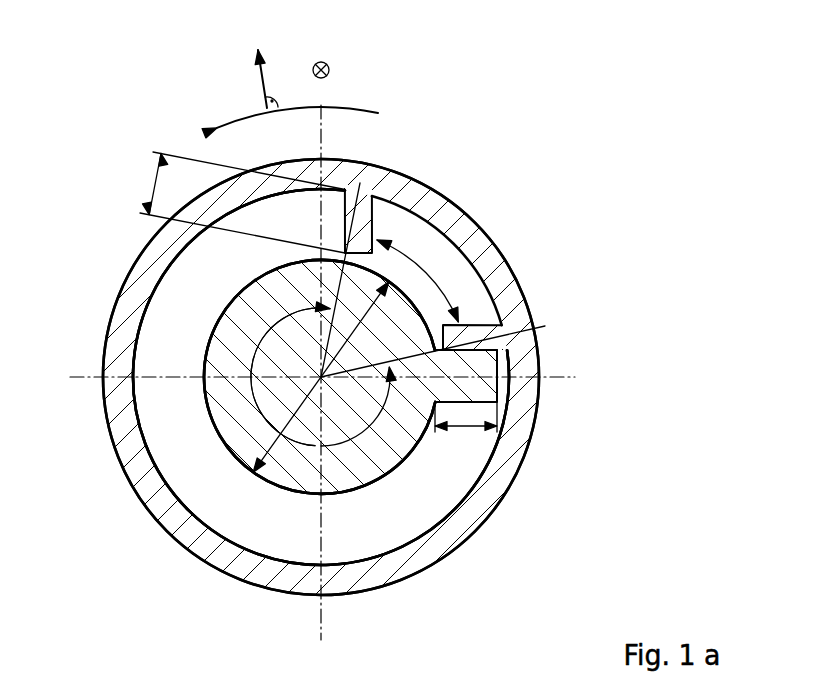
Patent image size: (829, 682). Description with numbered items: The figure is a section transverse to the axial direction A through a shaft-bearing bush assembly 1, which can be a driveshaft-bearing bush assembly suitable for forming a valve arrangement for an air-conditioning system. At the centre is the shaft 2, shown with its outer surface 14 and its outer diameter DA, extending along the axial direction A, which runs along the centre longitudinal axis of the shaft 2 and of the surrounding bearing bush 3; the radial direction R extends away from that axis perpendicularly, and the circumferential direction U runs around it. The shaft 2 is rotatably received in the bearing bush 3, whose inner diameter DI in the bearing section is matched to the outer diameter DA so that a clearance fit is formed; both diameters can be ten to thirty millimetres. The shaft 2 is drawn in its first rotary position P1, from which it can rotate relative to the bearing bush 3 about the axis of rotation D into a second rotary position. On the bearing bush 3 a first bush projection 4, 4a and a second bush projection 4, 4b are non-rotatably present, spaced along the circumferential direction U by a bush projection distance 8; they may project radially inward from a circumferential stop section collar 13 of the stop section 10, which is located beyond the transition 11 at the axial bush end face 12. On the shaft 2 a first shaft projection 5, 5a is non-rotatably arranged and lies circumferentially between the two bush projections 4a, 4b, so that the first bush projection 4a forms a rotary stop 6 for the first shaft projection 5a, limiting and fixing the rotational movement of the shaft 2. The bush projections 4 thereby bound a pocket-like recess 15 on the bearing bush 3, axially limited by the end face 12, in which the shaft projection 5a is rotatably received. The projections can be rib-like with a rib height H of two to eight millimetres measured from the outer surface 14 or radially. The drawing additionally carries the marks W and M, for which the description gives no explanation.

The shaft-bearing bush assembly 1 is at (593, 175).
The shaft 2 is at (362, 431).
The bearing bush 3 is at (517, 485).
The bush projection 4 is at (485, 235).
The first bush projection 4a is at (480, 333).
The second bush projection 4b is at (385, 202).
The shaft projection 5 is at (542, 384).
The first shaft projection 5a is at (487, 388).
The rotary stop 6 is at (497, 269).
The bush projection distance 8 is at (425, 268).
The stop section 10 is at (414, 410).
The transition 11 is at (442, 495).
The axial bush end face 12 is at (267, 528).
The stop section collar 13 is at (383, 572).
The outer surface 14 is at (212, 420).
The pocket-like recess 15 is at (342, 533).
The first rotary position P1 is at (387, 480).
The axial direction A is at (321, 61).
The radial direction R is at (262, 90).
The circumferential direction U is at (302, 89).
The torque direction M is at (348, 107).
The shaft / angular velocity W is at (316, 307).
The axis of rotation D is at (321, 376).
The rib height H is at (155, 186).
The outer diameter DA is at (191, 426).
The inner diameter DI is at (300, 446).